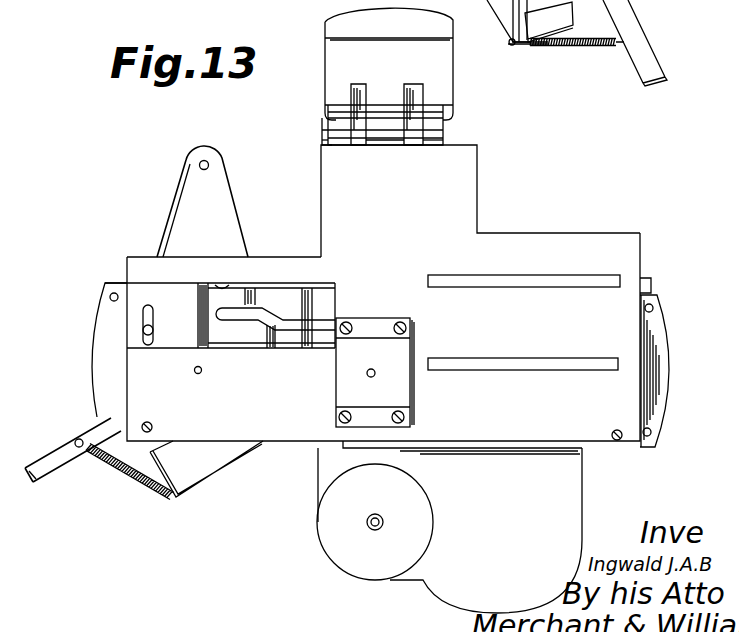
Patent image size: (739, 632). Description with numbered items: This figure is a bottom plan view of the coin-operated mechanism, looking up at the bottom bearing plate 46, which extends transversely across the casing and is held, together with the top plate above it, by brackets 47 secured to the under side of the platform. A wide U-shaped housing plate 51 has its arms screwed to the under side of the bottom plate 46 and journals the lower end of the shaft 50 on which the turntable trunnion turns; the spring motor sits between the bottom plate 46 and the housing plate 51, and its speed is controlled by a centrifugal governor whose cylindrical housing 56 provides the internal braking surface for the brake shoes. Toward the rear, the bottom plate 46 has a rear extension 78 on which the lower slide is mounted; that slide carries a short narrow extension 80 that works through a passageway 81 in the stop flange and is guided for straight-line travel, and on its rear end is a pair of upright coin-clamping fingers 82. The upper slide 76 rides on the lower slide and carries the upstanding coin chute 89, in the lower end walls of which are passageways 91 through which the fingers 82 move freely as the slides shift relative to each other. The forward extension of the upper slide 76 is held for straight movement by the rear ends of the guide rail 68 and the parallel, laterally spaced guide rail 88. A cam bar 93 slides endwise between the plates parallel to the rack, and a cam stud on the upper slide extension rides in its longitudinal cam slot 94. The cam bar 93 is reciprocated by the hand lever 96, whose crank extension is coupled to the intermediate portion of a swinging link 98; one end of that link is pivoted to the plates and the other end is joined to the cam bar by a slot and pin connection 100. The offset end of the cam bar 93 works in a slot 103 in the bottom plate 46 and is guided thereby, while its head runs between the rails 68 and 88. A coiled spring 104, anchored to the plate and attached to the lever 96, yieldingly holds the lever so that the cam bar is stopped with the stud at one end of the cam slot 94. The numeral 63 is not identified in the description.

The bottom bearing plate 46 is at (410, 227).
The bracket 47 is at (653, 375).
The shaft 50 is at (375, 373).
The housing plate 51 is at (393, 355).
The cylindrical housing 56 is at (343, 538).
The bracket 63 is at (547, 44).
The guide rail 68 is at (560, 347).
The upper slide 76 is at (333, 147).
The rear extension 78 is at (452, 211).
The extension 80 is at (372, 142).
The passageway 81 is at (417, 153).
The coin-clamping finger 82 is at (413, 117).
The guide rail 88 is at (537, 263).
The coin chute 89 is at (442, 76).
The passageway 91 is at (357, 88).
The cam bar 93 is at (167, 322).
The cam slot 94 is at (297, 327).
The hand lever 96 is at (107, 419).
The swinging link 98 is at (165, 236).
The slot and pin connection 100 is at (152, 340).
The slot 103 is at (237, 285).
The coiled spring 104 is at (140, 478).